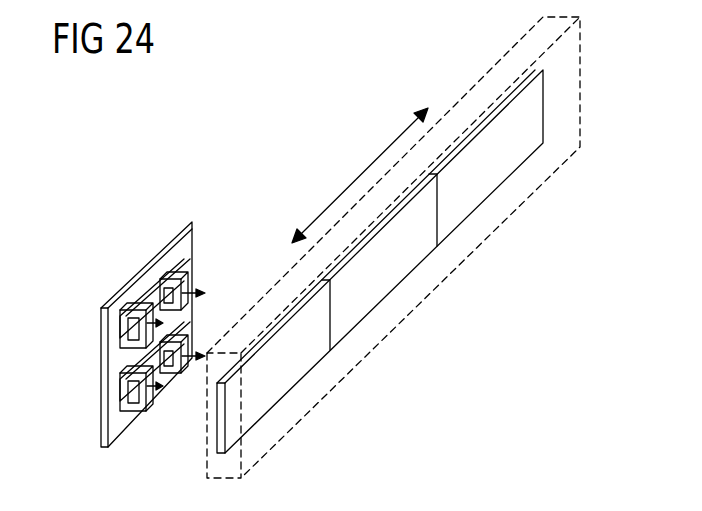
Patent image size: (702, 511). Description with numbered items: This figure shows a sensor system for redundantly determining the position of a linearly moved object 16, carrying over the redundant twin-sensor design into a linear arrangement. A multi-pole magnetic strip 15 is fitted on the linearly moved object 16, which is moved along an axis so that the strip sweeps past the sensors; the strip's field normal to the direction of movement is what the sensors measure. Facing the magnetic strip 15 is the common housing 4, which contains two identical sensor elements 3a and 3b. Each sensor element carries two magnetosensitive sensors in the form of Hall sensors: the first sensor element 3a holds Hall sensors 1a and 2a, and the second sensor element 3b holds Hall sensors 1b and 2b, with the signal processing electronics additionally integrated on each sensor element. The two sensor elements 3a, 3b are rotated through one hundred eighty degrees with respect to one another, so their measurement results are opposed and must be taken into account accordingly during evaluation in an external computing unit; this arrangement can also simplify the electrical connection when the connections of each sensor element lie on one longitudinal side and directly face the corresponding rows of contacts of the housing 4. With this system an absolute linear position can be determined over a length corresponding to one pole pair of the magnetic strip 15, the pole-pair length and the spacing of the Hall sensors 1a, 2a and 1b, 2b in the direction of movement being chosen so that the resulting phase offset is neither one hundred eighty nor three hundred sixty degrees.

The common housing 4 is at (101, 342).
The Hall sensor 1a is at (118, 392).
The Hall sensor 2a is at (176, 371).
The sensor element 3a is at (120, 410).
The Hall sensor 1b is at (167, 283).
The Hall sensor 2b is at (128, 306).
The sensor element 3b is at (152, 287).
The multi-pole magnetic strip 15 is at (392, 297).
The linearly moved object 16 is at (493, 232).